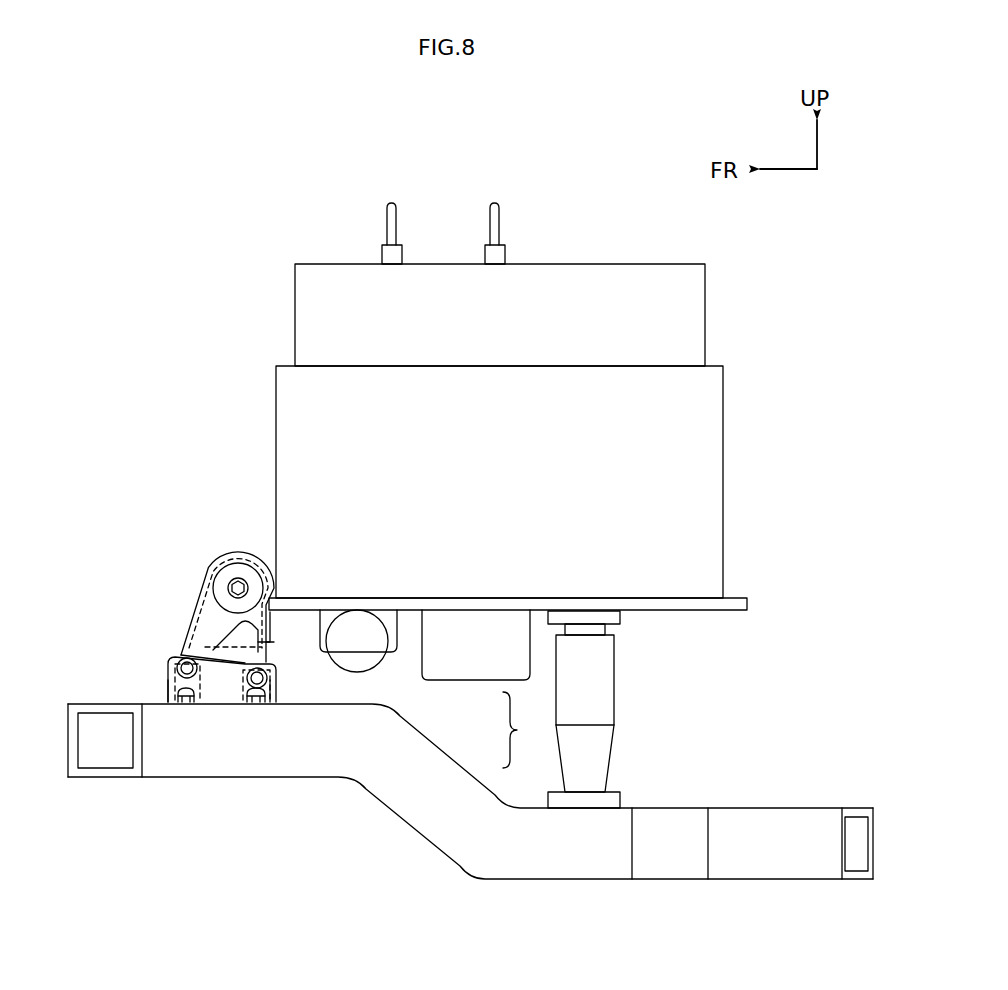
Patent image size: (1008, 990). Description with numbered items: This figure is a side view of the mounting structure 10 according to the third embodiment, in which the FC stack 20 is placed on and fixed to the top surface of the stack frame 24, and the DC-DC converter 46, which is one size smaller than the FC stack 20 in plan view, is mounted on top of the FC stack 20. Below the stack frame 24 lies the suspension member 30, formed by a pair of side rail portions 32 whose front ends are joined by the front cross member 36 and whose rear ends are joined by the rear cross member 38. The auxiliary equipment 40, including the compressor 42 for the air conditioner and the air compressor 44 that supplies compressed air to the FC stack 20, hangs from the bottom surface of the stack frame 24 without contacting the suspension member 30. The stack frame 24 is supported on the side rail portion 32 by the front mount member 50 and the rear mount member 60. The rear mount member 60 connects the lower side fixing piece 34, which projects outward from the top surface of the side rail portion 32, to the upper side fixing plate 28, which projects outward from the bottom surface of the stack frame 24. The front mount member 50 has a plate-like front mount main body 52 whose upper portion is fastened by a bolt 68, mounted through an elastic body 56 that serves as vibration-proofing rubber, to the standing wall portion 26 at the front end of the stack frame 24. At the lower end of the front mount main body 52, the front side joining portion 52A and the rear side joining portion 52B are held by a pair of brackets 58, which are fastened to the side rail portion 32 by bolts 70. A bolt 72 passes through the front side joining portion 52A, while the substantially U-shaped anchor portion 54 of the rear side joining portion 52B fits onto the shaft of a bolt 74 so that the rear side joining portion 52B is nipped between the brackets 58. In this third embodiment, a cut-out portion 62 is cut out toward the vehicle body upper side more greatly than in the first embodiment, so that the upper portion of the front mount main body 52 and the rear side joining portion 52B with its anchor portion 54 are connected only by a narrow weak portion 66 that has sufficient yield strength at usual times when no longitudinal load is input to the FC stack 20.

The mounting structure 10 is at (216, 618).
The FC stack 20 is at (557, 400).
The stack frame 24 is at (752, 594).
The standing wall portion 26 is at (272, 625).
The upper side fixing plate 28 is at (615, 620).
The suspension member 30 is at (768, 805).
The side rail portion 32 is at (592, 860).
The lower side fixing piece 34 is at (612, 800).
The front cross member 36 is at (105, 770).
The rear cross member 38 is at (862, 875).
The auxiliary equipment 40 is at (432, 689).
The compressor 42 is at (357, 655).
The air compressor 44 is at (430, 670).
The DC-DC converter 46 is at (693, 318).
The front mount member 50 is at (172, 634).
The front mount main body 52 is at (190, 617).
The front side joining portion 52A is at (170, 673).
The rear side joining portion 52B is at (282, 700).
The anchor portion 54 is at (277, 710).
The elastic body 56 is at (240, 584).
The bracket 58 is at (172, 680).
The rear mount member 60 is at (622, 708).
The cut-out portion 62 is at (232, 660).
The weak portion 66 is at (262, 641).
The bolt 68 is at (234, 577).
The bolt 70 is at (180, 703).
The bolt 72 is at (193, 690).
The bolt 74 is at (242, 703).